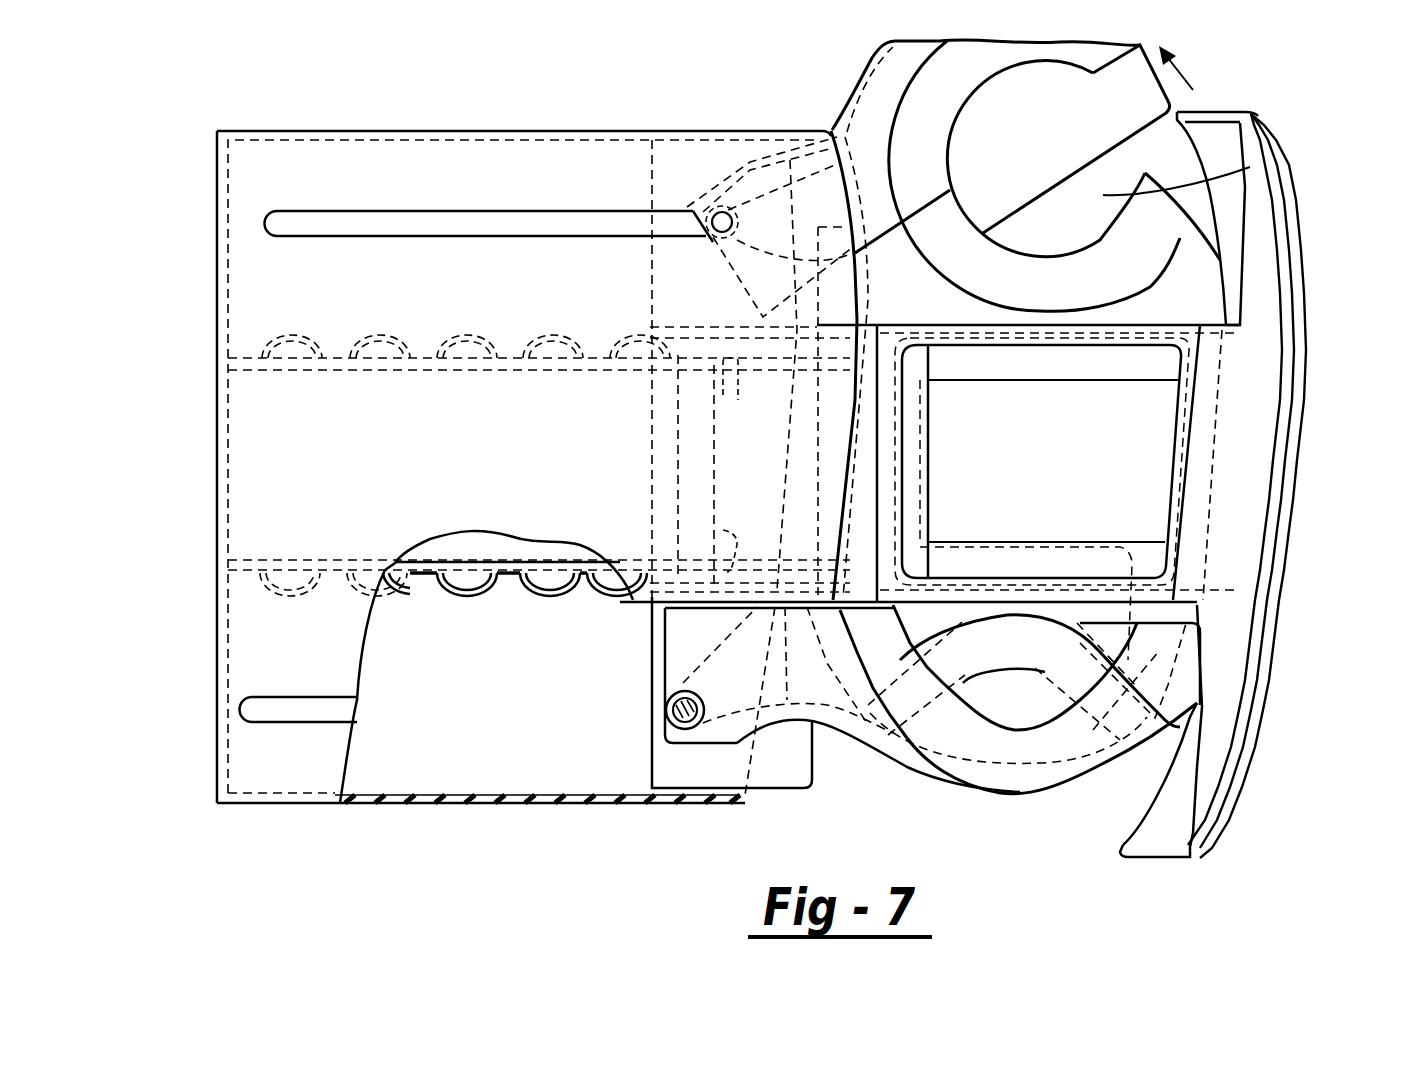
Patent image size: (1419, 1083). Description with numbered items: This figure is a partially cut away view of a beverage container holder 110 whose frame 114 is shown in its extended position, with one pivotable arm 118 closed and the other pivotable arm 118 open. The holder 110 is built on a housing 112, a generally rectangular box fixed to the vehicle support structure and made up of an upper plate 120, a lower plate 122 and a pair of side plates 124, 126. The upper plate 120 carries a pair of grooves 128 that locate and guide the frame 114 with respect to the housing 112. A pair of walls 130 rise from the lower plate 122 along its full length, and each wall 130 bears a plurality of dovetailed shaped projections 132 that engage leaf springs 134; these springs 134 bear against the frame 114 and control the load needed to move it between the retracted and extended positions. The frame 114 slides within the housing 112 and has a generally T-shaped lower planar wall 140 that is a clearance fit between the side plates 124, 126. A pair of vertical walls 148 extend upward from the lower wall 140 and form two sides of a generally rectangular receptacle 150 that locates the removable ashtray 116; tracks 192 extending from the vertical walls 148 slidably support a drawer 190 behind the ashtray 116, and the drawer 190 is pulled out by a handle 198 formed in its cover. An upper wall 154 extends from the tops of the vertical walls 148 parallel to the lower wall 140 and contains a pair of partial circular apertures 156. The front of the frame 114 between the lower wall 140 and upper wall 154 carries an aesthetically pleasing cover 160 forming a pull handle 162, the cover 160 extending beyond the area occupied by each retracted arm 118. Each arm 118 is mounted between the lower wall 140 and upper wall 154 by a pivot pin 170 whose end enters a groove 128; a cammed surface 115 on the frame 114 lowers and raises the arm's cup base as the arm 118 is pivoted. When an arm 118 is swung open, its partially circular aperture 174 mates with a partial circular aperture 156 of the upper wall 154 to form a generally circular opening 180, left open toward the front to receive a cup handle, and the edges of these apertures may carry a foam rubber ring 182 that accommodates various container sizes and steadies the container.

The beverage container holder 110 is at (578, 94).
The housing 112 is at (260, 749).
The frame 114 is at (800, 773).
The cammed surface 115 is at (1268, 138).
The ashtray 116 is at (1150, 436).
The pivotable arm 118 is at (1153, 97).
The upper plate 120 is at (263, 644).
The lower plate 122 is at (413, 770).
The side plate 124 is at (502, 803).
The side plate 126 is at (427, 131).
The groove 128 is at (328, 220).
The wall 130 is at (470, 367).
The dovetailed shaped projection 132 is at (337, 362).
The leaf spring 134 is at (475, 340).
The lower planar wall 140 is at (765, 770).
The vertical wall 148 is at (1255, 345).
The rectangular receptacle 150 is at (1068, 482).
The upper wall 154 is at (1197, 290).
The partial circular aperture 156 is at (1180, 238).
The cover 160 is at (1258, 733).
The pull handle 162 is at (1282, 484).
The pivot pin 170 is at (718, 217).
The partially circular aperture 174 is at (893, 115).
The circular opening 180 is at (1227, 140).
The foam rubber ring 182 is at (947, 115).
The drawer 190 is at (930, 443).
The track 192 is at (733, 385).
The handle 198 is at (930, 518).